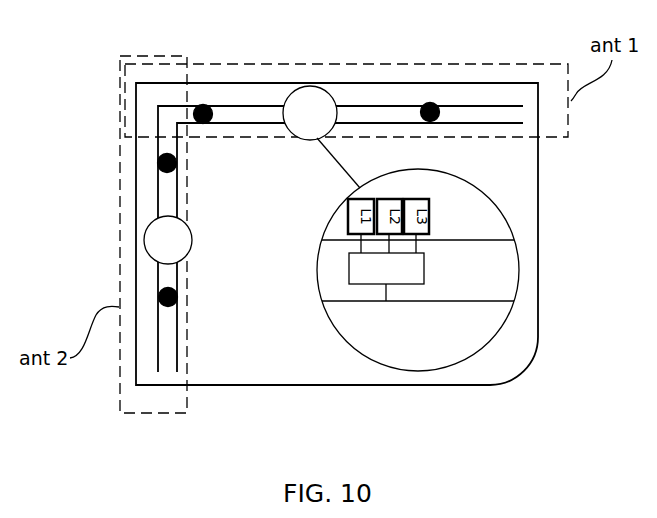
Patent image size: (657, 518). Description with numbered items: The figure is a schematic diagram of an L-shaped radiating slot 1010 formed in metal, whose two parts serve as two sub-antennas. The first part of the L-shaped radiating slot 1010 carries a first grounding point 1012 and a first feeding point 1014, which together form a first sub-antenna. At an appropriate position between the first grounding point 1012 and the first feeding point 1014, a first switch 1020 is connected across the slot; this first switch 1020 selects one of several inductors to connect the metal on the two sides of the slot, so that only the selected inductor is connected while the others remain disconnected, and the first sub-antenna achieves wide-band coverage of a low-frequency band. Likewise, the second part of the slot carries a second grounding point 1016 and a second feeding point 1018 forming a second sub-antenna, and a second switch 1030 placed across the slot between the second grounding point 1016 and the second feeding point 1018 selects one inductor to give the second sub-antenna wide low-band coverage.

The L-shaped radiating slot 1010 is at (168, 353).
The first grounding point 1012 is at (205, 106).
The first feeding point 1014 is at (438, 117).
The second grounding point 1016 is at (173, 170).
The second feeding point 1018 is at (160, 296).
The first switch 1020 is at (425, 266).
The second switch 1030 is at (192, 243).